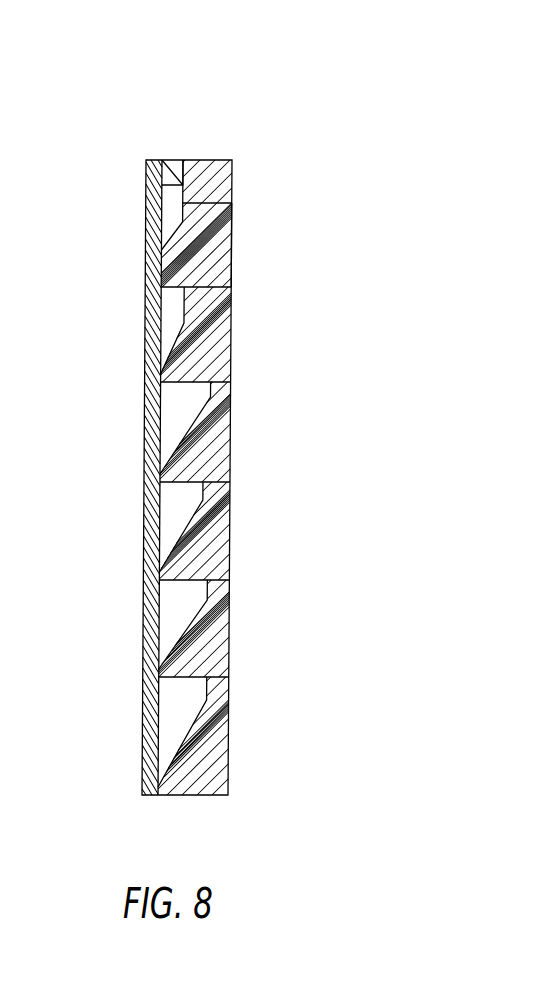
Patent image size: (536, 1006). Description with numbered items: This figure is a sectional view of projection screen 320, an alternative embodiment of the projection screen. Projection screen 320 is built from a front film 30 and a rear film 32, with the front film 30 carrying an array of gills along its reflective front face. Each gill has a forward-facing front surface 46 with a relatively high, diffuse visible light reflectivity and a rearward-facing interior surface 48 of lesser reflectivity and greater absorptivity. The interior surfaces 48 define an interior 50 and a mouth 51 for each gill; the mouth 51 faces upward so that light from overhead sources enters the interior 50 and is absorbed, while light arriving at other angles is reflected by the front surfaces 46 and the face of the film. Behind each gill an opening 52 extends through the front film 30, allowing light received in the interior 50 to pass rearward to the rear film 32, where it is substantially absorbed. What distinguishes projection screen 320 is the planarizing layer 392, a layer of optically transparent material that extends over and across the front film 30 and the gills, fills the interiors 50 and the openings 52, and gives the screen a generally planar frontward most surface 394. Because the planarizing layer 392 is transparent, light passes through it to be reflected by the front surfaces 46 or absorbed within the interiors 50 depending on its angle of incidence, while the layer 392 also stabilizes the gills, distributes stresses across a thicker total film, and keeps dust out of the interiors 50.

The front film 30 is at (165, 797).
The rear film 32 is at (160, 267).
The front surface 46 is at (232, 201).
The interior surface 48 is at (232, 247).
The interior 50 is at (177, 314).
The mouth 51 is at (181, 163).
The opening 52 is at (165, 398).
The projection screen 320 is at (268, 152).
The planarizing layer 392 is at (233, 310).
The frontward most surface 394 is at (231, 379).